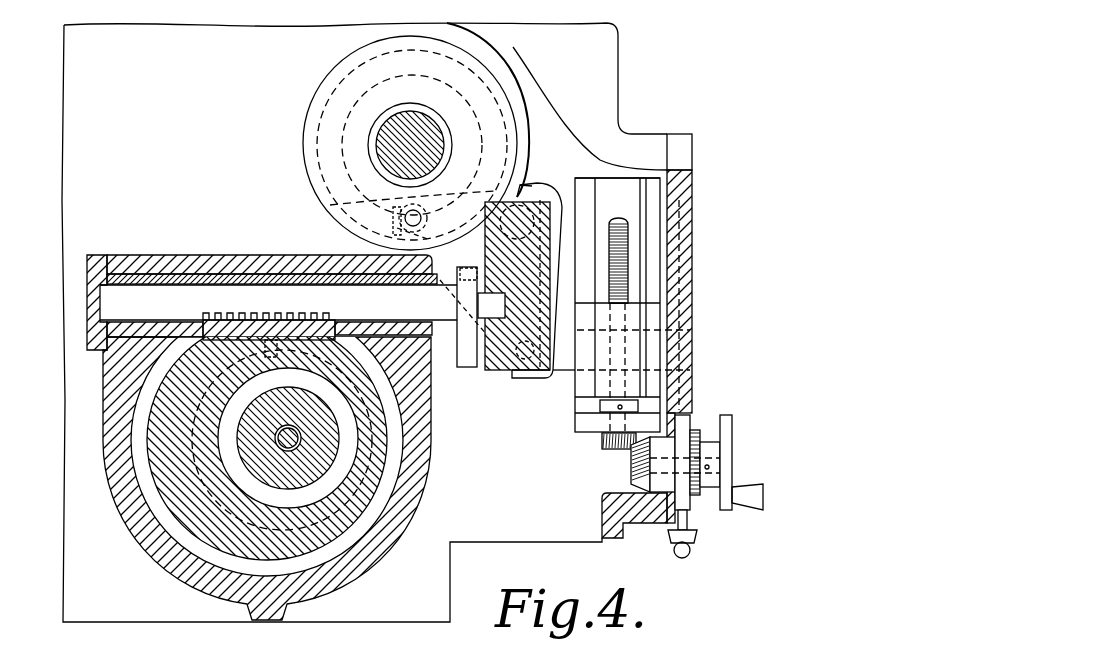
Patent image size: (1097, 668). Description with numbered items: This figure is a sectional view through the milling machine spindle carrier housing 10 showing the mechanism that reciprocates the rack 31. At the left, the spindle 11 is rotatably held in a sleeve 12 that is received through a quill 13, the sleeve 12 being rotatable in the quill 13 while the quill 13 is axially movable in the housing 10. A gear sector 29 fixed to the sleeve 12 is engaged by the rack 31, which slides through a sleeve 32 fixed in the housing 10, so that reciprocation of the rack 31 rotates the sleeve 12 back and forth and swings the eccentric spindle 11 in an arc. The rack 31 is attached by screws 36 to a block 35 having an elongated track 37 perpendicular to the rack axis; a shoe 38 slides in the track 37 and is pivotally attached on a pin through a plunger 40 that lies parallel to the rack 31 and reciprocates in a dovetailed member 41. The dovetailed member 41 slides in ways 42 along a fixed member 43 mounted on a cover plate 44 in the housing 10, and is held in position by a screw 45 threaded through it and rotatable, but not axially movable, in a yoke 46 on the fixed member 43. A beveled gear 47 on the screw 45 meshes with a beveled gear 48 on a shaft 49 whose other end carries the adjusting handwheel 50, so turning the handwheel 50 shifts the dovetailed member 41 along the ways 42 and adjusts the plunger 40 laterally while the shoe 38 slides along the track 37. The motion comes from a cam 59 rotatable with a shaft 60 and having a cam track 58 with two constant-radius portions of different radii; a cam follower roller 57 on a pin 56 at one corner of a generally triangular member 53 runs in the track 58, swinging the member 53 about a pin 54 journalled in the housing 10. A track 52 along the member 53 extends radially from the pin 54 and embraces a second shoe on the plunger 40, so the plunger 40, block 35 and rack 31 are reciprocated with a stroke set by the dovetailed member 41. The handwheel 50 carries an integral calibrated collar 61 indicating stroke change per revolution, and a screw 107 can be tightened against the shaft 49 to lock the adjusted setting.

The spindle carrier housing 10 is at (618, 70).
The spindle 11 is at (273, 412).
The sleeve 12 is at (160, 493).
The quill 13 is at (132, 530).
The gear sector 29 is at (207, 317).
The rack 31 is at (178, 288).
The sleeve 32 is at (223, 273).
The block 35 is at (503, 370).
The screws 36 is at (455, 287).
The track 37 is at (543, 307).
The shoe 38 is at (523, 375).
The plunger 40 is at (568, 375).
The dovetailed member 41 is at (654, 359).
The ways 42 is at (595, 213).
The fixed member 43 is at (610, 178).
The cover plate 44 is at (690, 193).
The screw 45 is at (627, 283).
The yoke 46 is at (573, 423).
The beveled gear 47 is at (603, 443).
The beveled gear 48 is at (630, 477).
The shaft 49 is at (697, 430).
The adjusting handwheel 50 is at (732, 478).
The track 52 is at (540, 190).
The triangular member 53 is at (517, 193).
The pin 54 is at (505, 217).
The pin 56 is at (397, 228).
The cam follower roller 57 is at (398, 218).
The cam track 58 is at (353, 196).
The cam 59 is at (308, 118).
The shaft 60 is at (440, 127).
The collar 61 is at (692, 495).
The screw 107 is at (672, 543).